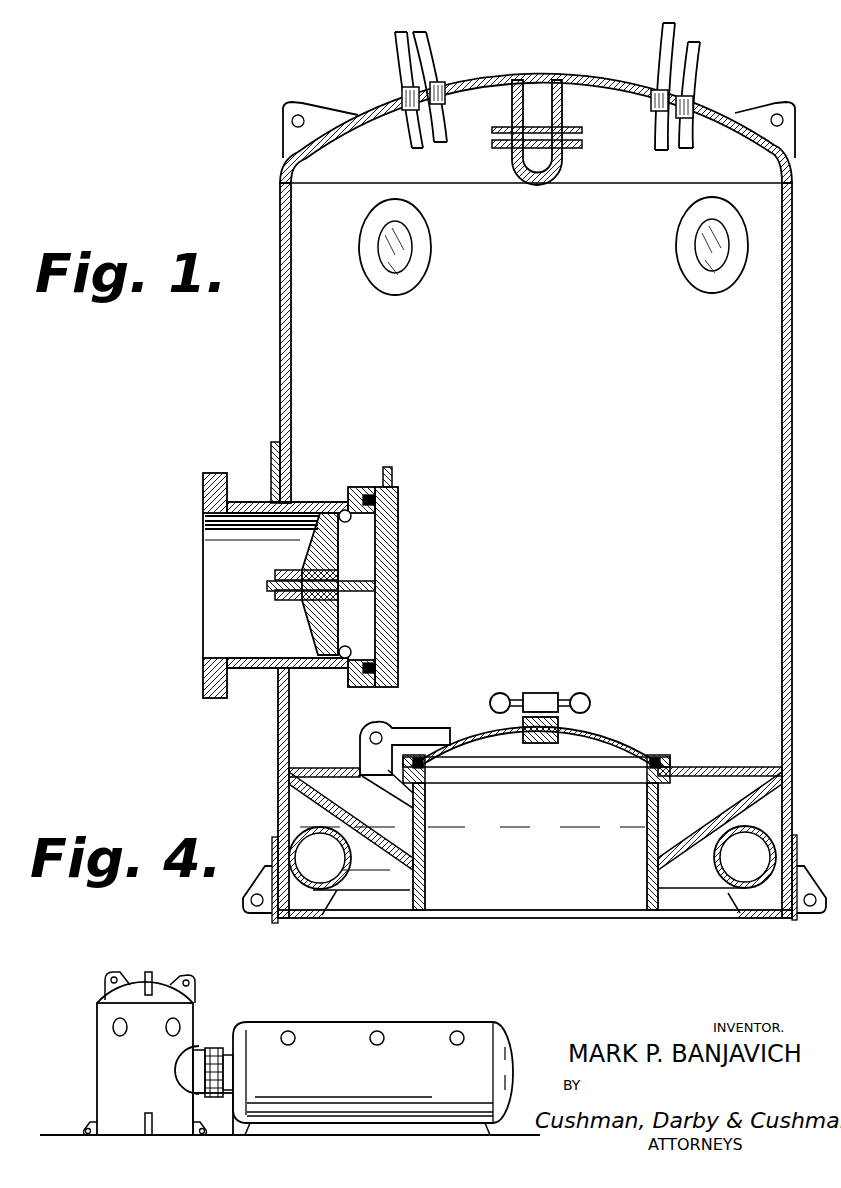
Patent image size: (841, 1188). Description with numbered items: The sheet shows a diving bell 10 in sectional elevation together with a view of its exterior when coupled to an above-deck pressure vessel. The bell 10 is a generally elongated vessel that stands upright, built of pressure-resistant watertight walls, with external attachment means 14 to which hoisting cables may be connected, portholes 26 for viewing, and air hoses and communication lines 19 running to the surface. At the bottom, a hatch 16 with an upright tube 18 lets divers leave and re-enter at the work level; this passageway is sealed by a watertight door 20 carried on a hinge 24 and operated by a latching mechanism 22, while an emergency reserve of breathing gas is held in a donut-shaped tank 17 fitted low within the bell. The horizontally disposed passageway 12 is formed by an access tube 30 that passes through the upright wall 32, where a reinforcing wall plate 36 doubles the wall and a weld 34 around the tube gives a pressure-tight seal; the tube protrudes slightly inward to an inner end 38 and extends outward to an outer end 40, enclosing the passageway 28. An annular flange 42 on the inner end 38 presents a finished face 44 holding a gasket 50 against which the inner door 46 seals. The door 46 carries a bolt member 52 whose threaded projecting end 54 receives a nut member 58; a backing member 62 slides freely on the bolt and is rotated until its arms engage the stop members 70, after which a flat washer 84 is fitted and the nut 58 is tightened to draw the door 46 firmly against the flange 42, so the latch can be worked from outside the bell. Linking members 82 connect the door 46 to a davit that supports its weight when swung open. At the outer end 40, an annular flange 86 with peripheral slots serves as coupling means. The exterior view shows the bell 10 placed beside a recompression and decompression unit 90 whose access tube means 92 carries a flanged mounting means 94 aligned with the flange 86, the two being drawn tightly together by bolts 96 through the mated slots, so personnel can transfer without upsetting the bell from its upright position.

In FIG. 4, the diving bell 10 is at (82, 1030).
In FIG. 1, the horizontally disposed passageway 12 is at (238, 498).
In FIG. 4, the horizontally disposed passageway 12 is at (205, 1048).
In FIG. 1, the external attachment means 14 is at (328, 120).
In FIG. 1, the hatch 16 is at (528, 779).
In FIG. 1, the tank 17 is at (532, 857).
In FIG. 1, the upright tube 18 is at (428, 897).
In FIG. 1, the air hoses and communication lines 19 is at (440, 56).
In FIG. 1, the door 20 is at (615, 736).
In FIG. 1, the latching mechanism 22 is at (560, 684).
In FIG. 1, the hinge 24 is at (368, 742).
In FIG. 1, the portholes 26 is at (410, 250).
In FIG. 1, the passageway 28 is at (250, 592).
In FIG. 1, the access tube 30 is at (253, 668).
In FIG. 1, the upright wall 32 is at (292, 393).
In FIG. 1, the weld 34 is at (292, 500).
In FIG. 1, the reinforcing wall plate 36 is at (275, 451).
In FIG. 4, the reinforcing wall plate 36 is at (183, 1075).
In FIG. 1, the inner end 38 is at (362, 478).
In FIG. 1, the outer end 40 is at (203, 668).
In FIG. 1, the annular flange 42 is at (350, 688).
In FIG. 1, the face 44 is at (398, 683).
In FIG. 1, the door 46 is at (400, 583).
In FIG. 1, the gasket 50 is at (376, 499).
In FIG. 1, the bolt member 52 is at (357, 577).
In FIG. 1, the projecting end 54 is at (268, 588).
In FIG. 1, the nut member 58 is at (290, 600).
In FIG. 1, the backing member 62 is at (300, 548).
In FIG. 1, the stop members 70 is at (345, 510).
In FIG. 1, the linking members 82 is at (395, 478).
In FIG. 1, the flat washer 84 is at (312, 602).
In FIG. 1, the annular flange 86 is at (203, 490).
In FIG. 4, the recompression and decompression unit 90 is at (327, 1025).
In FIG. 4, the access tube means 92 is at (225, 1072).
In FIG. 4, the flanged mounting means 94 is at (215, 1097).
In FIG. 4, the bolts 96 is at (225, 1060).